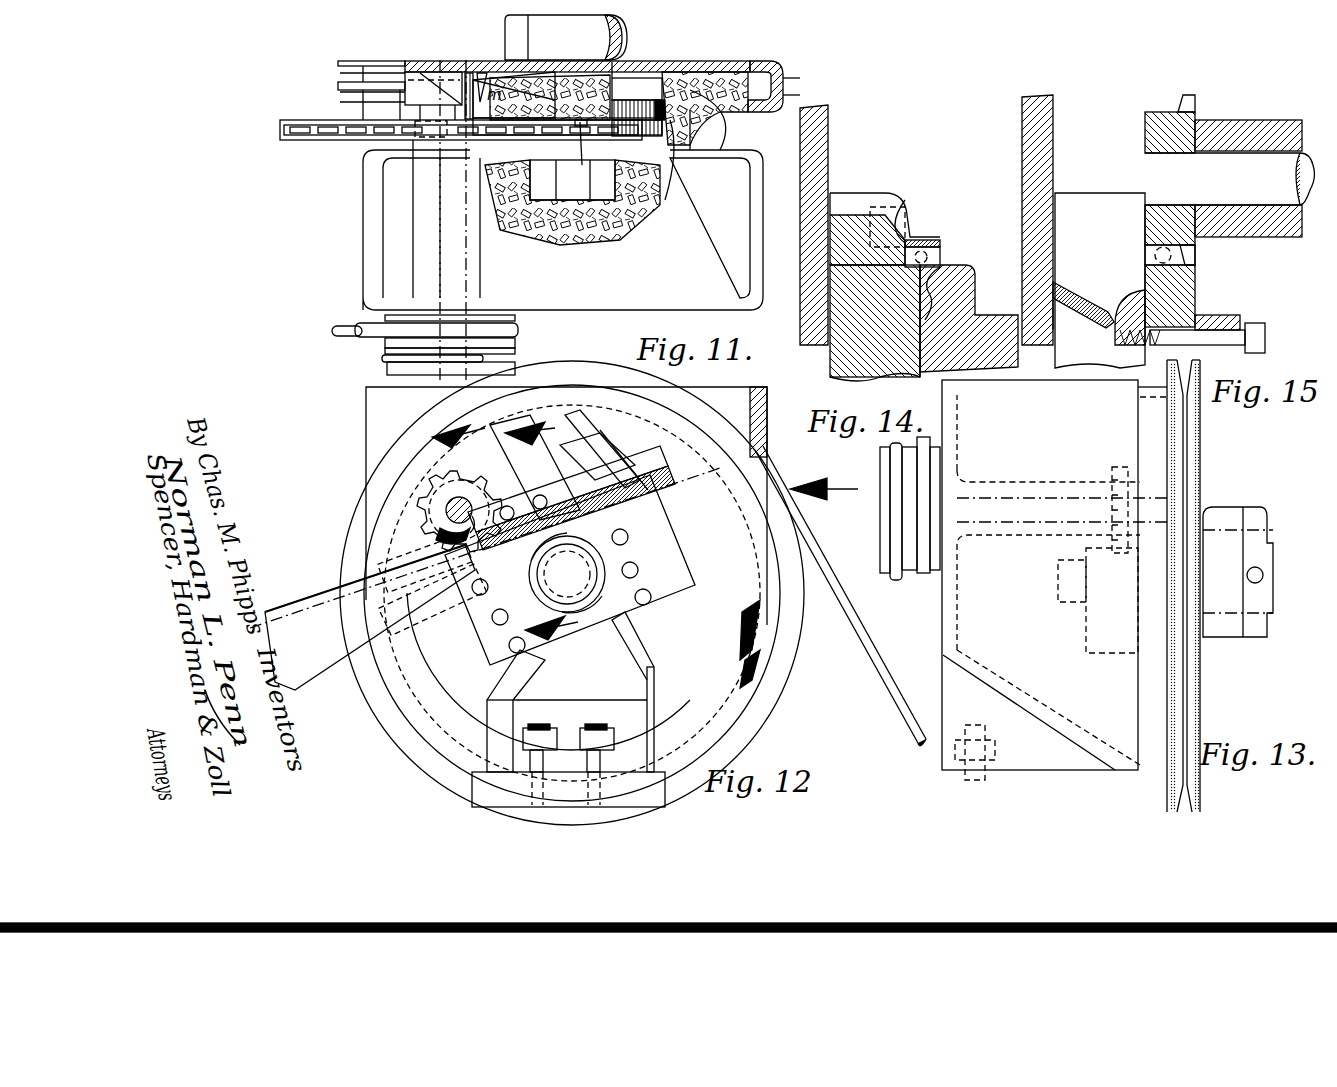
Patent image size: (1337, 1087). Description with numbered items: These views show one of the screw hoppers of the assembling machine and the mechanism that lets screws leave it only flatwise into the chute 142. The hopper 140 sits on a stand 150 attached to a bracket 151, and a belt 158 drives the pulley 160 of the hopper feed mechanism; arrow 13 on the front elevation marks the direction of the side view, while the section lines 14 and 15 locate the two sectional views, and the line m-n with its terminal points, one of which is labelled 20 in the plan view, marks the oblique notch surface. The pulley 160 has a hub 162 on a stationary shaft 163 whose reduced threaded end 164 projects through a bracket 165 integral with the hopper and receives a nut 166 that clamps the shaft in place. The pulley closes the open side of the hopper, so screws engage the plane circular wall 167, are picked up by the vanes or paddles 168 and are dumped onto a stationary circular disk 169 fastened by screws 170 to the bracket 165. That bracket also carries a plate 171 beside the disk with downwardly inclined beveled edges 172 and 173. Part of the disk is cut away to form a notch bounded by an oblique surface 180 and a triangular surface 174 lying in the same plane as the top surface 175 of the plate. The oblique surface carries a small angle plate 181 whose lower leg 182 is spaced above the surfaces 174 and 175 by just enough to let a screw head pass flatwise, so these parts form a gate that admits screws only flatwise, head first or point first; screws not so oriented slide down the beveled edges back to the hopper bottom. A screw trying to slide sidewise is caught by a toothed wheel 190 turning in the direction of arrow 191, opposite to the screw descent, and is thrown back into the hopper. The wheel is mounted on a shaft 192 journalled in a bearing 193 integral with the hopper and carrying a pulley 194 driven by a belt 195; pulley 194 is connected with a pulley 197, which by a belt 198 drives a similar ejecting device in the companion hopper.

In FIG. 12, the arrow 13 is at (824, 503).
In FIG. 12, the section line 14— 14 is at (564, 594).
In FIG. 12, the section line 15— 15 is at (505, 516).
In FIG. 11, the cylinder 20 is at (612, 70).
In FIG. 11, the hopper 140 is at (372, 206).
In FIG. 11, the chute 142 is at (330, 141).
In FIG. 15, the chute 142 is at (1198, 305).
In FIG. 12, the chute 142 is at (310, 610).
In FIG. 12, the stand 150 is at (640, 720).
In FIG. 13, the stand 150 is at (963, 710).
In FIG. 12, the bracket 151 is at (470, 782).
In FIG. 12, the belt 158 is at (800, 553).
In FIG. 11, the pulley 160 is at (738, 66).
In FIG. 13, the pulley 160 is at (1185, 722).
In FIG. 11, the hub 162 is at (614, 80).
In FIG. 13, the hub 162 is at (1225, 530).
In FIG. 11, the stationary shaft 163 is at (592, 28).
In FIG. 13, the stationary shaft 163 is at (1225, 615).
In FIG. 13, the reduced threaded end 164 is at (1100, 615).
In FIG. 11, the bracket 165 is at (480, 165).
In FIG. 15, the bracket 165 is at (1240, 318).
In FIG. 12, the bracket 165 is at (460, 640).
In FIG. 13, the bracket 165 is at (1090, 672).
In FIG. 11, the nut 166 is at (606, 228).
In FIG. 12, the nut 166 is at (592, 598).
In FIG. 13, the nut 166 is at (1062, 600).
In FIG. 11, the plane circular wall 167 is at (682, 80).
In FIG. 14, the plane circular wall 167 is at (828, 138).
In FIG. 15, the plane circular wall 167 is at (1055, 148).
In FIG. 13, the plane circular wall 167 is at (1182, 432).
In FIG. 11, the vanes or paddles 168 is at (415, 93).
In FIG. 15, the vanes or paddles 168 is at (1085, 305).
In FIG. 12, the vanes or paddles 168 is at (760, 595).
In FIG. 11, the stationary circular disk 169 is at (461, 112).
In FIG. 14, the stationary circular disk 169 is at (838, 215).
In FIG. 15, the stationary circular disk 169 is at (1075, 230).
In FIG. 12, the stationary circular disk 169 is at (600, 470).
In FIG. 13, the stationary circular disk 169 is at (1150, 505).
In FIG. 11, the screws 170 is at (672, 140).
In FIG. 15, the screws 170 is at (1258, 338).
In FIG. 12, the screws 170 is at (627, 535).
In FIG. 11, the plate 171 is at (692, 125).
In FIG. 14, the plate 171 is at (975, 290).
In FIG. 12, the plate 171 is at (640, 520).
In FIG. 11, the beveled edge 172 is at (625, 136).
In FIG. 14, the beveled edge 172 is at (958, 292).
In FIG. 12, the beveled edge 172 is at (640, 480).
In FIG. 11, the beveled edge 173 is at (532, 135).
In FIG. 14, the beveled edge 173 is at (968, 268).
In FIG. 12, the beveled edge 173 is at (548, 508).
In FIG. 11, the surface 174 is at (548, 103).
In FIG. 14, the surface 174 is at (935, 270).
In FIG. 12, the surface 174 is at (620, 470).
In FIG. 11, the top surface 175 is at (490, 150).
In FIG. 14, the top surface 175 is at (950, 268).
In FIG. 15, the top surface 175 is at (1222, 288).
In FIG. 12, the top surface 175 is at (485, 600).
In FIG. 11, the oblique surface 180 is at (525, 98).
In FIG. 14, the oblique surface 180 is at (905, 210).
In FIG. 11, the angle plate 181 is at (468, 108).
In FIG. 14, the angle plate 181 is at (915, 248).
In FIG. 12, the angle plate 181 is at (560, 495).
In FIG. 14, the lower leg 182 is at (928, 243).
In FIG. 11, the toothed wheel 190 is at (436, 100).
In FIG. 15, the toothed wheel 190 is at (1197, 256).
In FIG. 12, the toothed wheel 190 is at (440, 534).
In FIG. 13, the toothed wheel 190 is at (1120, 480).
In FIG. 12, the arrow 191 is at (435, 505).
In FIG. 11, the shaft 192 is at (455, 222).
In FIG. 15, the shaft 192 is at (1235, 170).
In FIG. 12, the shaft 192 is at (448, 505).
In FIG. 13, the shaft 192 is at (1008, 508).
In FIG. 11, the bearing 193 is at (468, 270).
In FIG. 15, the bearing 193 is at (1262, 128).
In FIG. 13, the bearing 193 is at (1057, 530).
In FIG. 11, the pulley 194 is at (505, 349).
In FIG. 13, the pulley 194 is at (885, 565).
In FIG. 11, the belt 195 is at (397, 366).
In FIG. 13, the belt 195 is at (893, 475).
In FIG. 11, the pulley 197 is at (388, 320).
In FIG. 13, the pulley 197 is at (923, 570).
In FIG. 11, the belt 198 is at (505, 330).
In FIG. 13, the belt 198 is at (922, 575).